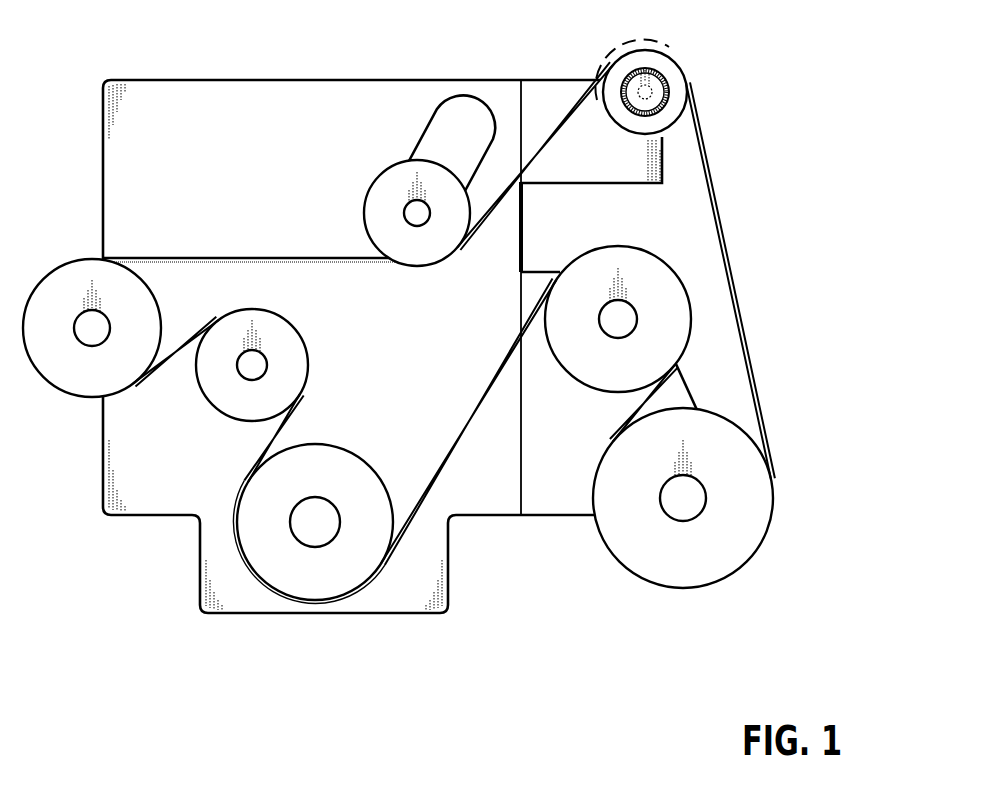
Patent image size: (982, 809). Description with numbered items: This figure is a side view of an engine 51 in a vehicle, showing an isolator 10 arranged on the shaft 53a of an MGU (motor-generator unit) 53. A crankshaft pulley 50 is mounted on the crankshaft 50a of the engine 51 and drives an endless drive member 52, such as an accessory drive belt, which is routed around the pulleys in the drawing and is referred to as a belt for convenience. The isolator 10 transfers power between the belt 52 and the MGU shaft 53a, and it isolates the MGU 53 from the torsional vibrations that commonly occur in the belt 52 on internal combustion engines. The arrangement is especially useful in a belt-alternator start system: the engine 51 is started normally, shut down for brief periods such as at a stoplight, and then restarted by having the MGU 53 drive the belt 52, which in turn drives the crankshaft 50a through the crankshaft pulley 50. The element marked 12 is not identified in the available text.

The isolator 10 is at (388, 502).
The bearing 12 is at (656, 68).
The crankshaft pulley 50 is at (301, 596).
The crankshaft 50a is at (326, 546).
The engine 51 is at (220, 552).
The endless drive member 52 is at (170, 258).
The MGU (motor-generator unit) 53 is at (628, 58).
The shaft 53a is at (644, 97).